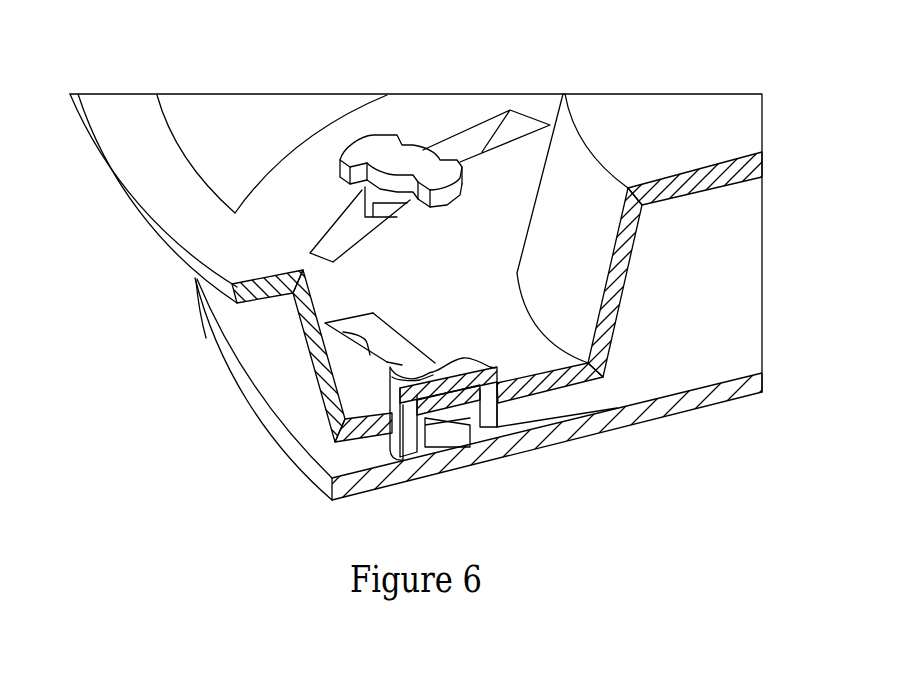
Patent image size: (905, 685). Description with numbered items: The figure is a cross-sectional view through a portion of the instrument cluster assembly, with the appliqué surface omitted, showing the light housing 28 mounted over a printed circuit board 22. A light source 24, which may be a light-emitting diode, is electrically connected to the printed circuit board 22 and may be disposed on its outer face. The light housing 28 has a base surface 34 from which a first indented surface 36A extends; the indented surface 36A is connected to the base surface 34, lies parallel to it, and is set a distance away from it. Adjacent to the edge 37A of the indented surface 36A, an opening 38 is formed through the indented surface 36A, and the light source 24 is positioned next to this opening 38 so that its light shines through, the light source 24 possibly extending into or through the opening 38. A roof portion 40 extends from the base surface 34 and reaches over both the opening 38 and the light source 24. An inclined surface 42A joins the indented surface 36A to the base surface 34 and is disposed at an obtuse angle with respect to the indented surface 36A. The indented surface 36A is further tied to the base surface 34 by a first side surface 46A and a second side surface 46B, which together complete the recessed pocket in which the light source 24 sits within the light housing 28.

The printed circuit board 22 is at (358, 458).
The light source 24 is at (442, 442).
The light housing 28 is at (92, 209).
The base surface 34 is at (527, 362).
The first indented surface 36A is at (388, 358).
The edge of indented surface 37A is at (463, 400).
The opening 38 is at (477, 433).
The roof portion 40 is at (392, 372).
The inclined surface 42A is at (356, 325).
The first side surface 46A is at (327, 338).
The second side surface 46B is at (410, 353).